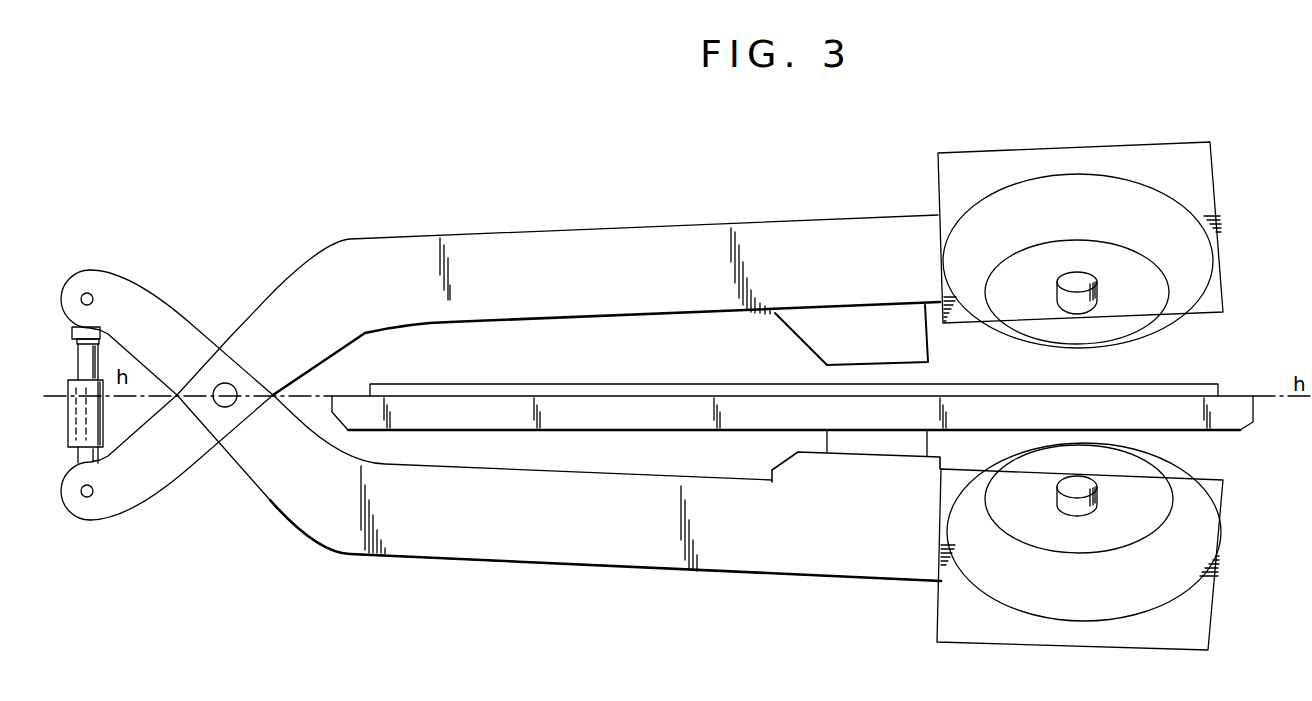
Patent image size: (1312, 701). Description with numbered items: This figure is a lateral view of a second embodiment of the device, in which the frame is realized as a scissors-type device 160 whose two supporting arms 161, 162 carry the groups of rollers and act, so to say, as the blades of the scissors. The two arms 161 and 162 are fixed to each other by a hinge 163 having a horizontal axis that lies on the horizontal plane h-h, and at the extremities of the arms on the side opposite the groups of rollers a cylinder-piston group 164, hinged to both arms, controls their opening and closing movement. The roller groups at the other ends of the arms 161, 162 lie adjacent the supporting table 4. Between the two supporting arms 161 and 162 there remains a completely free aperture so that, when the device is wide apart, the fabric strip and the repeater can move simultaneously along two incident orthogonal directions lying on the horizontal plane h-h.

The supporting table 4 is at (637, 410).
The scissors-type device 160 is at (331, 233).
The supporting arm 161 is at (550, 253).
The supporting arm 162 is at (332, 538).
The hinge 163 is at (226, 398).
The cylinder-piston group 164 is at (105, 427).